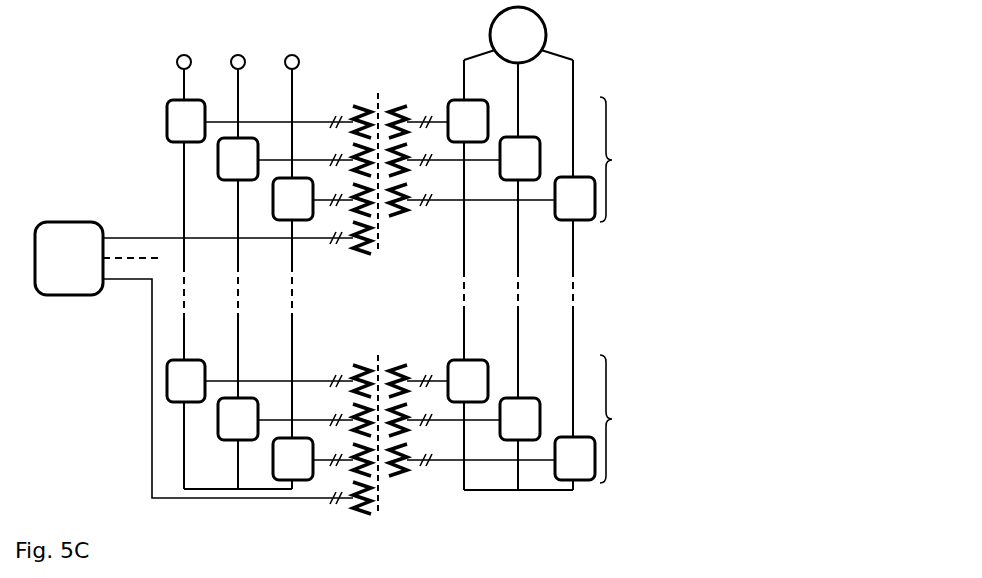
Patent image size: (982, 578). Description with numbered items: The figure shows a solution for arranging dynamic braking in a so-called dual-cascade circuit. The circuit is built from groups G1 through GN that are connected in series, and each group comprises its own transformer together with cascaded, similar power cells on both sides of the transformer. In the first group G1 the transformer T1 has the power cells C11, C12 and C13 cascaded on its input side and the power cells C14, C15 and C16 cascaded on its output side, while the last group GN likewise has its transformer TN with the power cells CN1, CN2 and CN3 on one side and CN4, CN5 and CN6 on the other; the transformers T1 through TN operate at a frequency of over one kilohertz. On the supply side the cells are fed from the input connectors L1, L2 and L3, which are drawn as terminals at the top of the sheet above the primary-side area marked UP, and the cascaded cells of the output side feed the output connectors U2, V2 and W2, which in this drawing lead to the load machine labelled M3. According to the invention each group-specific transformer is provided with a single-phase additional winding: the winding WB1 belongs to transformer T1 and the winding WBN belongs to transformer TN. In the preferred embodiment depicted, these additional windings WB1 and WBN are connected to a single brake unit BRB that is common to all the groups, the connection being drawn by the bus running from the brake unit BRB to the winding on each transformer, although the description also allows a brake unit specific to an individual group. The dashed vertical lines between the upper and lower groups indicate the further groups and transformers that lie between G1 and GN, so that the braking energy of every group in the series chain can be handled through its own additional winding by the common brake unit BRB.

The input connector L1 is at (181, 261).
The input connector L2 is at (235, 261).
The input connector L3 is at (288, 261).
The primary side power unit UP is at (238, 248).
The power cell C11 is at (260, 121).
The power cell C12 is at (285, 159).
The power cell C13 is at (313, 199).
The power cell C14 is at (468, 121).
The power cell C15 is at (520, 158).
The power cell C16 is at (575, 198).
The transformer T1 is at (454, 170).
The single-phase additional winding WB1 is at (237, 249).
The brake unit BRB is at (194, 363).
The motor M3 is at (518, 35).
The output connector U2 is at (450, 275).
The output connector V2 is at (506, 276).
The output connector W2 is at (518, 275).
The group G1 is at (618, 159).
The power cell CN1 is at (260, 381).
The power cell CN2 is at (285, 419).
The power cell CN3 is at (313, 459).
The power cell CN4 is at (468, 381).
The power cell CN5 is at (520, 419).
The power cell CN6 is at (575, 458).
The transformer TN is at (454, 429).
The single-phase additional winding WBN is at (346, 509).
The group GN is at (618, 419).